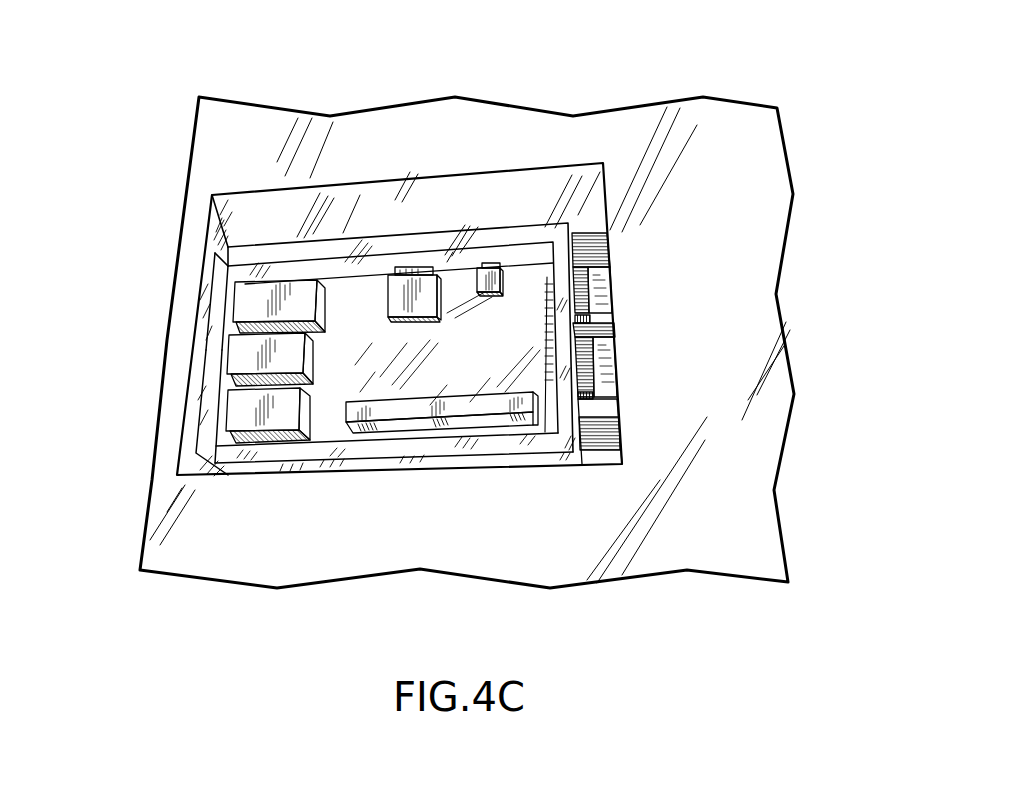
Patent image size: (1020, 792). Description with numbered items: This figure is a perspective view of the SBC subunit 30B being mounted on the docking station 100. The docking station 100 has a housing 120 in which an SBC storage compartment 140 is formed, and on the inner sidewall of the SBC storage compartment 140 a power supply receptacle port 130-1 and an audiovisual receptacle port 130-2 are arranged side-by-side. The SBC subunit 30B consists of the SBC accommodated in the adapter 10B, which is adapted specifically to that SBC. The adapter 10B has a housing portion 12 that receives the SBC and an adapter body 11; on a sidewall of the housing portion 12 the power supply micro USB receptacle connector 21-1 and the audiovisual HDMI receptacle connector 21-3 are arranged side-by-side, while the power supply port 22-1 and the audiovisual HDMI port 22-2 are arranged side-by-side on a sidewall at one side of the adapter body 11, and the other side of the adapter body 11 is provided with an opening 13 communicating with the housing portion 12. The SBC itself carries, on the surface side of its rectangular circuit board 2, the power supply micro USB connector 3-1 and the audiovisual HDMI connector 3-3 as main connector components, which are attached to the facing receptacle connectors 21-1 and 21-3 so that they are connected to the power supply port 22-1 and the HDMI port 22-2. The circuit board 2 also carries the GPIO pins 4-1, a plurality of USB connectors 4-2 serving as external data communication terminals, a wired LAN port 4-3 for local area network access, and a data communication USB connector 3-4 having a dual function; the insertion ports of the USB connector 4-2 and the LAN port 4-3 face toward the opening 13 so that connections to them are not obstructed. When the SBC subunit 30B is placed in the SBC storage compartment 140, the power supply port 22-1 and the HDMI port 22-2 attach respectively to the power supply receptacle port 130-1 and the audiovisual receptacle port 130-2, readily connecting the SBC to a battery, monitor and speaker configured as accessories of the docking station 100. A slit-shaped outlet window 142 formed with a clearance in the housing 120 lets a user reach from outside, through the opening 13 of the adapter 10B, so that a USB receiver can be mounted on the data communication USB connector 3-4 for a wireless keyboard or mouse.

The docking station 100 is at (796, 194).
The housing 120 is at (640, 127).
The SBC subunit 30B is at (247, 215).
The adapter 10B is at (288, 238).
The housing portion 12 is at (368, 267).
The SBC storage compartment 140 is at (465, 250).
The opening 13 is at (215, 265).
The outlet window 142 is at (205, 408).
The adapter body 11 is at (466, 442).
The circuit board 2 is at (333, 425).
The wired LAN port 4-3 is at (245, 307).
The USB connector 4-2 is at (245, 347).
The data communication USB connector 3-4 is at (247, 413).
The audiovisual HDMI receptacle connector 21-3 is at (411, 268).
The audiovisual HDMI connector 3-3 is at (415, 308).
The power supply micro USB receptacle connector 21-1 is at (493, 283).
The power supply micro USB connector 3-1 is at (492, 303).
The GPIO pins 4-1 is at (506, 428).
The power supply port 22-1 is at (582, 297).
The power supply receptacle port 130-1 is at (605, 285).
The audiovisual HDMI port 22-2 is at (583, 372).
The audiovisual receptacle port 130-2 is at (608, 347).